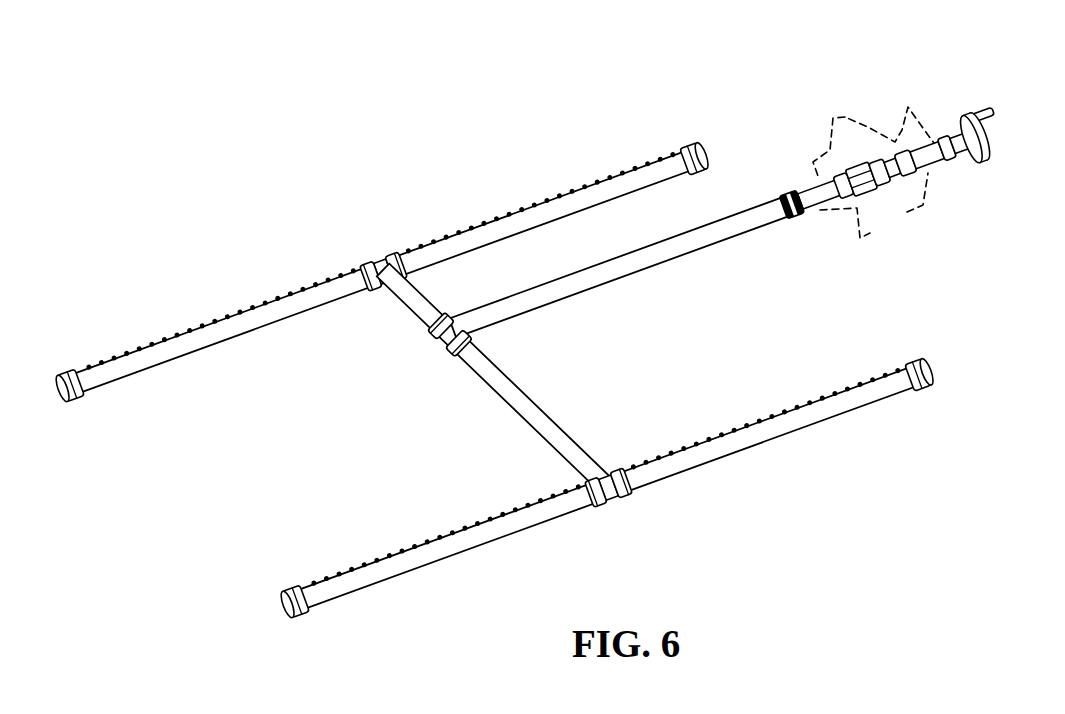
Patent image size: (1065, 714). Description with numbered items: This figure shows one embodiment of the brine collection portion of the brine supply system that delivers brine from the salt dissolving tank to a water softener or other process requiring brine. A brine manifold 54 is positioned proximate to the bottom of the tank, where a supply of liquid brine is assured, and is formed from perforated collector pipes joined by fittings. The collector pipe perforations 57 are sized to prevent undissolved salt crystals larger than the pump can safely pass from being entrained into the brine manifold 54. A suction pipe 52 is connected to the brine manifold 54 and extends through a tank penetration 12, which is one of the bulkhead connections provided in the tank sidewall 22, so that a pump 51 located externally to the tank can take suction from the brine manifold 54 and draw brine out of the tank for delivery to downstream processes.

The brine supply connection 12 is at (878, 216).
The tank sidewall 22 is at (887, 120).
The pump 51 is at (973, 108).
The suction pipe 52 is at (687, 257).
The brine manifold 54 is at (937, 305).
The collector pipe perforations 57 is at (521, 203).